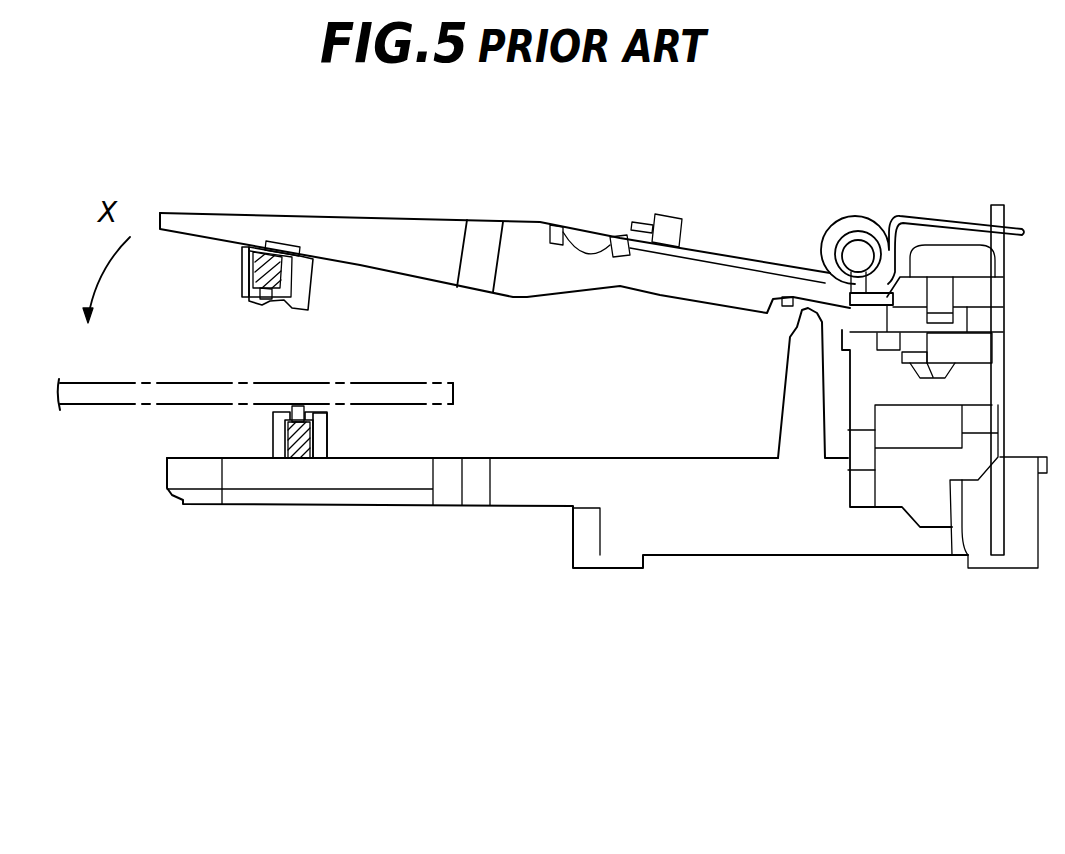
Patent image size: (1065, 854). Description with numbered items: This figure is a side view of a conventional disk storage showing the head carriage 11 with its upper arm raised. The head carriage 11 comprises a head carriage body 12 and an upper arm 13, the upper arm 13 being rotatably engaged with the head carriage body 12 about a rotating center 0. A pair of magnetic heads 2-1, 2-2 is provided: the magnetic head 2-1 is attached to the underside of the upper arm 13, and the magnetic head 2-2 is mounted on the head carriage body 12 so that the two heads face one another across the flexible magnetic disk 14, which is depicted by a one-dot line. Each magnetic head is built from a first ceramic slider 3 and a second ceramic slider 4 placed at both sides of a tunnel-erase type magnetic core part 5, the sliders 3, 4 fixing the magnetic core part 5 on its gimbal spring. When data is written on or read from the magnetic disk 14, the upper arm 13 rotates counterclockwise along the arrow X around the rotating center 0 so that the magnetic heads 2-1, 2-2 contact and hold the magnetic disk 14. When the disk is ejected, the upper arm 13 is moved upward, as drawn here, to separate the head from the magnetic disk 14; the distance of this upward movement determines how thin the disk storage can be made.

The head carriage 11 is at (706, 153).
The head carriage body 12 is at (697, 478).
The upper arm 13 is at (422, 232).
The flexible magnetic disk 14 is at (430, 378).
The rotating center 0 is at (887, 308).
The magnetic head 2-1 is at (252, 349).
The magnetic head 2-2 is at (232, 421).
The first ceramic slider 3 is at (305, 287).
The second ceramic slider 4 is at (237, 288).
The magnetic core part 5 is at (220, 266).